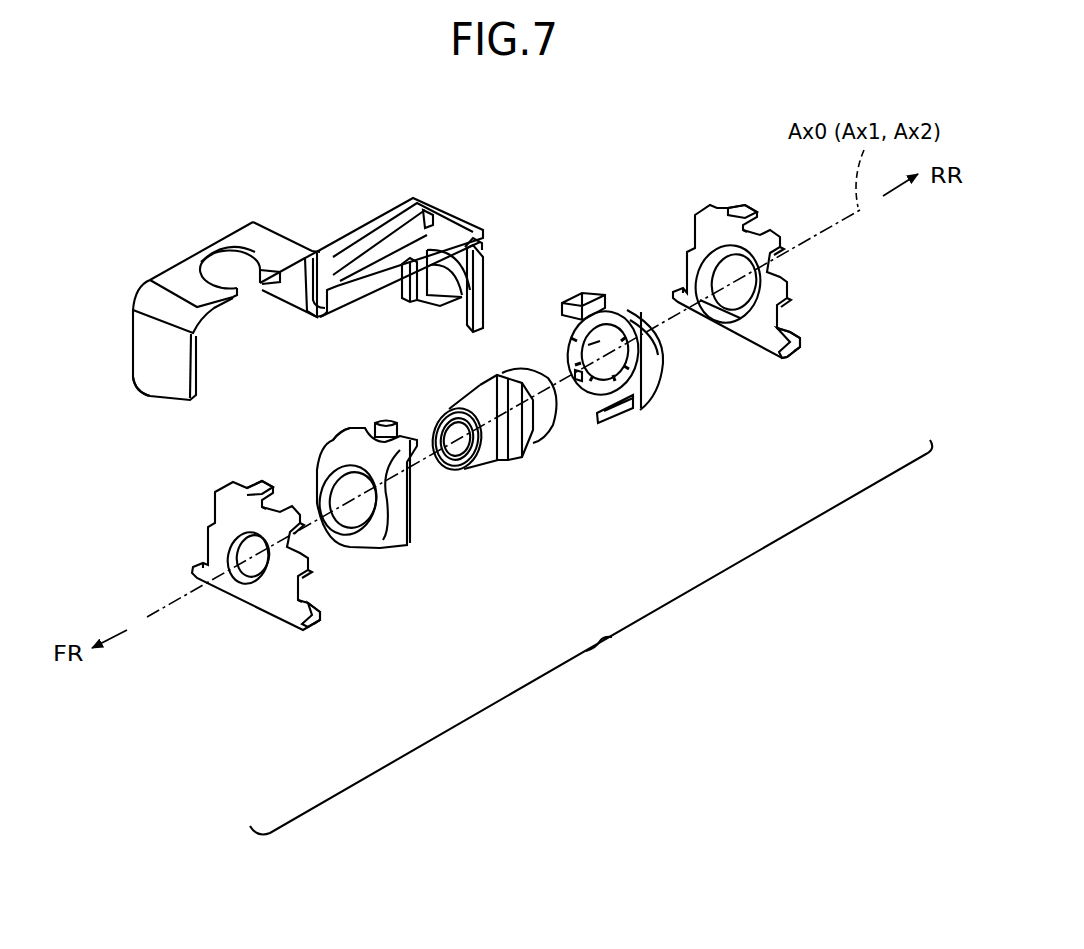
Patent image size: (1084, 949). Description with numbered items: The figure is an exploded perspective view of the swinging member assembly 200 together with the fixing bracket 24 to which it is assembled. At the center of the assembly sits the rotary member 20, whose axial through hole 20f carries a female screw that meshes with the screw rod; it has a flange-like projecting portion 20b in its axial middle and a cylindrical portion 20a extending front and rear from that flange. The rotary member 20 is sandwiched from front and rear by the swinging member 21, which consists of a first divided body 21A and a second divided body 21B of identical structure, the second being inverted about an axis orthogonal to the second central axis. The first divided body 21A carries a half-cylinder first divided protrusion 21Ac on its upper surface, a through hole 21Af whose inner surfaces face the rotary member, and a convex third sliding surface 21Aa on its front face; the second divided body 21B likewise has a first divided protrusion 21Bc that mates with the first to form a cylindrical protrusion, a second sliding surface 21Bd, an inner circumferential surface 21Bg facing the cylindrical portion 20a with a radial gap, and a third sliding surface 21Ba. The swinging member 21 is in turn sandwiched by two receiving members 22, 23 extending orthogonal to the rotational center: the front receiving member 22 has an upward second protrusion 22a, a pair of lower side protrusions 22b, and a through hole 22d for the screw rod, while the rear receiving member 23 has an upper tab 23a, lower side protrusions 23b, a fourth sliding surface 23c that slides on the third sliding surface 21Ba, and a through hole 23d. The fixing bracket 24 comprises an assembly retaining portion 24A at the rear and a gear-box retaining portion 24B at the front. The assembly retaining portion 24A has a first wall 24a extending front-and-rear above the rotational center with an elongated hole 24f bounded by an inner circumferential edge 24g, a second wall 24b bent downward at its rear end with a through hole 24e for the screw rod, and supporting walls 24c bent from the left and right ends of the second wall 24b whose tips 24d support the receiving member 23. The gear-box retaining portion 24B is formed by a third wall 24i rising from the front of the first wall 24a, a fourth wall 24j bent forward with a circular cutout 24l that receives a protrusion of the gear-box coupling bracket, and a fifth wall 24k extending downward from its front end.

The swinging member assembly 200 is at (591, 637).
The rotary member 20 is at (502, 479).
The cylindrical portion 20a is at (521, 370).
The projecting portion 20b is at (523, 460).
The through hole 20f is at (452, 465).
The swinging member 21 is at (498, 446).
The first divided body 21A is at (342, 545).
The third sliding surface 21Aa is at (340, 452).
The first divided protrusion 21Ac is at (388, 420).
The through hole 21Af is at (342, 527).
The second divided body 21B is at (617, 372).
The third sliding surface 21Ba is at (640, 317).
The first divided protrusion 21Bc is at (593, 298).
The second sliding surface 21Bd is at (583, 390).
The inner circumferential surface 21Bg is at (597, 350).
The receiving member 22 is at (241, 635).
The second protrusion 22a is at (257, 490).
The lower side protrusions 22b is at (315, 628).
The through hole 22d is at (247, 585).
The receiving member 23 is at (774, 308).
The rear plate upper tab 23a is at (740, 217).
The lower side protrusions 23b is at (800, 334).
The fourth sliding surface 23c is at (733, 312).
The through hole 23d is at (727, 273).
The fixing bracket 24 is at (284, 264).
The assembly retaining portion 24A is at (377, 222).
The gear-box retaining portion 24B is at (145, 332).
The first wall 24a is at (402, 215).
The second wall 24b is at (437, 298).
The supporting walls 24c is at (475, 275).
The tips 24d is at (463, 312).
The through hole 24e is at (447, 265).
The elongated hole 24f is at (353, 265).
The inner circumferential edge 24g is at (378, 258).
The third wall 24i is at (300, 284).
The fourth wall 24j is at (187, 283).
The fifth wall 24k is at (145, 353).
The cutout 24l is at (220, 255).